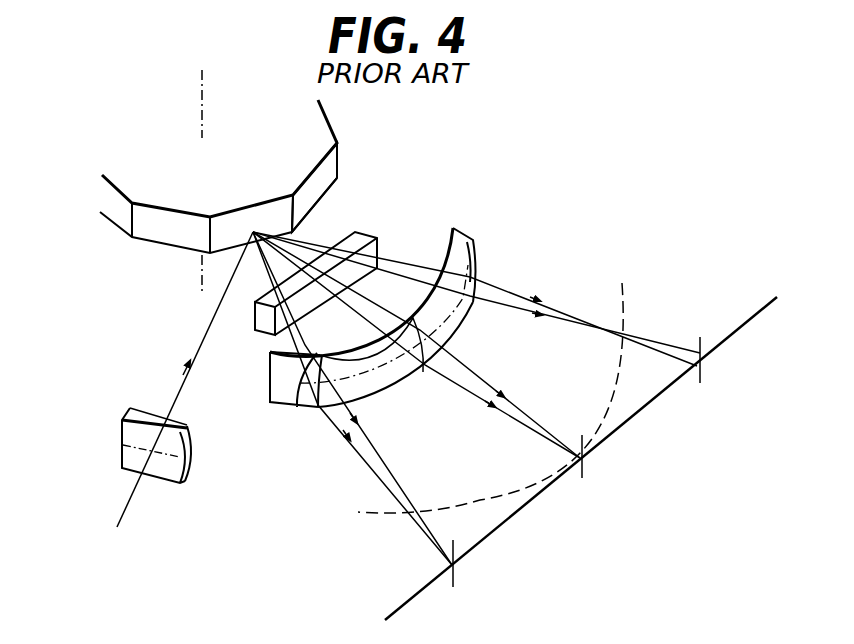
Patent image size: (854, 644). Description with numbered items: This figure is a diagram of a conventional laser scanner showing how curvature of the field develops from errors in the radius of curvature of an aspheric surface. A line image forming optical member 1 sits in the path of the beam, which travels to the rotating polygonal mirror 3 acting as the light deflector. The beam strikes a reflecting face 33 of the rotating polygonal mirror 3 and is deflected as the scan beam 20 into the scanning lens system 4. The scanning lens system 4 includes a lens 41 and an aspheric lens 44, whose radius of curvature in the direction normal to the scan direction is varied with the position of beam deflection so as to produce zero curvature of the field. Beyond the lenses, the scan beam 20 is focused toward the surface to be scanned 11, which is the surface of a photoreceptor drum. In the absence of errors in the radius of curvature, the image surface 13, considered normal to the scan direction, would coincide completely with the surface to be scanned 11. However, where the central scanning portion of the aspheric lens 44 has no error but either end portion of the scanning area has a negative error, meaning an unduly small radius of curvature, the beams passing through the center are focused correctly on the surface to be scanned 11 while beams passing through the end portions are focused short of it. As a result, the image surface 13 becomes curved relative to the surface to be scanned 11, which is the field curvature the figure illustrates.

The line image forming optical member 1 is at (190, 453).
The scan beam 20 is at (175, 400).
The rotating polygonal mirror 3 is at (310, 123).
The reflecting face of the rotating polygonal mirror 33 is at (330, 167).
The scanning lens system 4 is at (401, 285).
The first lens 41 is at (372, 238).
The aspheric lens 44 is at (405, 316).
The image surface 13 is at (622, 317).
The surface to be scanned 11 is at (745, 323).